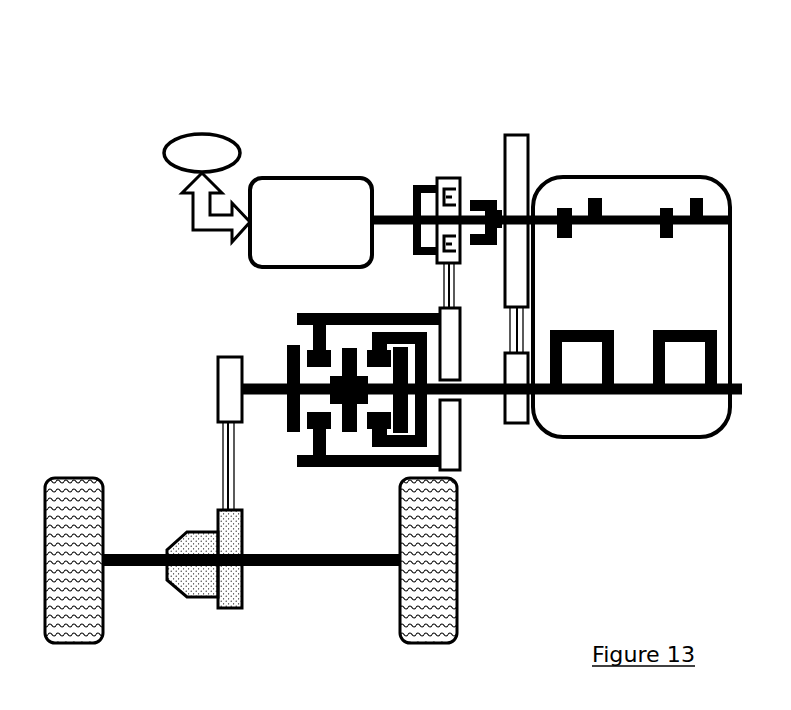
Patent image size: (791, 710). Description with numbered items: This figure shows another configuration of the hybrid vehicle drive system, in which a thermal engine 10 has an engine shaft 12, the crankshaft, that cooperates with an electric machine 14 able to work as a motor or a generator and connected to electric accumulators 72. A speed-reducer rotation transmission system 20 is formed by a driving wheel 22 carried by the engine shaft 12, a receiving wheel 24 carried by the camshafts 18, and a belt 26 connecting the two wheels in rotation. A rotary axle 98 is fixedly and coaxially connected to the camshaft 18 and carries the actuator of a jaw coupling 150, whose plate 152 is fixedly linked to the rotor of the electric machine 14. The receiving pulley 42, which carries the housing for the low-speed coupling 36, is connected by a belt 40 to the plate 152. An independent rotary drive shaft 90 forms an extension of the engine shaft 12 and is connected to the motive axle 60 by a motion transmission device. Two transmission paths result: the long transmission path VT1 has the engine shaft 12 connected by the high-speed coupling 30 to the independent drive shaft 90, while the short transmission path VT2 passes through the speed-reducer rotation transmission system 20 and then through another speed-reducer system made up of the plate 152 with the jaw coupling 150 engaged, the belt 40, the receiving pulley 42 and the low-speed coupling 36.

The thermal engine 10 is at (705, 301).
The engine shaft 12 is at (637, 395).
The electric machine 14 is at (326, 235).
The camshafts 18 is at (637, 216).
The speed-reducer rotation transmission system 20 is at (543, 296).
The driving wheel 22 is at (520, 405).
The receiving wheel 24 is at (518, 167).
The belt 26 is at (518, 323).
The high-speed coupling 30 is at (368, 437).
The low-speed coupling 36 is at (311, 394).
The belt 40 is at (447, 282).
The receiving pulley 42 is at (449, 462).
The motive axle 60 is at (331, 608).
The electric accumulators 72 is at (216, 165).
The independent rotary drive shaft 90 is at (233, 356).
The rotary axle 98 is at (470, 200).
The jaw coupling 150 is at (452, 240).
The plate 152 is at (441, 185).
The long transmission path VT1 is at (491, 439).
The short transmission path VT2 is at (577, 172).